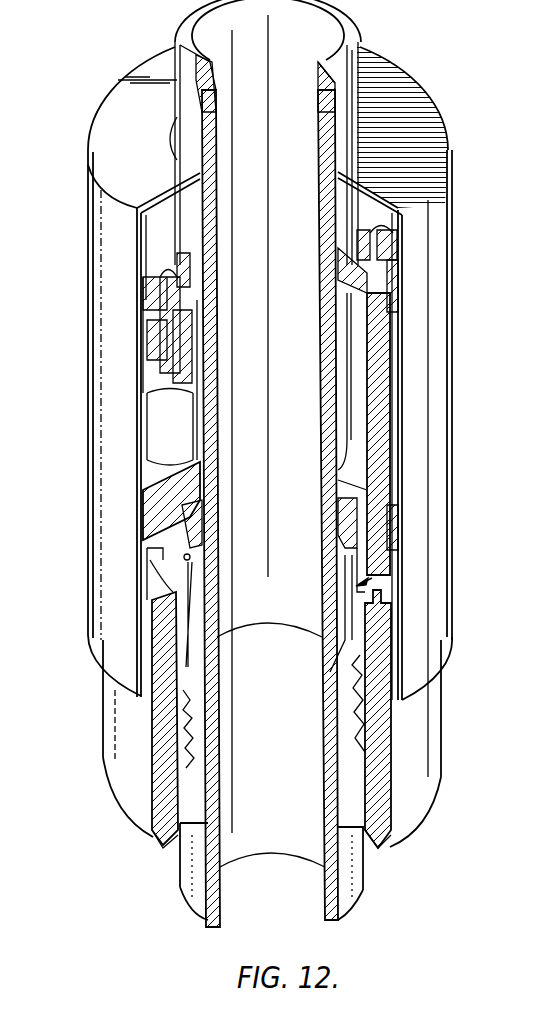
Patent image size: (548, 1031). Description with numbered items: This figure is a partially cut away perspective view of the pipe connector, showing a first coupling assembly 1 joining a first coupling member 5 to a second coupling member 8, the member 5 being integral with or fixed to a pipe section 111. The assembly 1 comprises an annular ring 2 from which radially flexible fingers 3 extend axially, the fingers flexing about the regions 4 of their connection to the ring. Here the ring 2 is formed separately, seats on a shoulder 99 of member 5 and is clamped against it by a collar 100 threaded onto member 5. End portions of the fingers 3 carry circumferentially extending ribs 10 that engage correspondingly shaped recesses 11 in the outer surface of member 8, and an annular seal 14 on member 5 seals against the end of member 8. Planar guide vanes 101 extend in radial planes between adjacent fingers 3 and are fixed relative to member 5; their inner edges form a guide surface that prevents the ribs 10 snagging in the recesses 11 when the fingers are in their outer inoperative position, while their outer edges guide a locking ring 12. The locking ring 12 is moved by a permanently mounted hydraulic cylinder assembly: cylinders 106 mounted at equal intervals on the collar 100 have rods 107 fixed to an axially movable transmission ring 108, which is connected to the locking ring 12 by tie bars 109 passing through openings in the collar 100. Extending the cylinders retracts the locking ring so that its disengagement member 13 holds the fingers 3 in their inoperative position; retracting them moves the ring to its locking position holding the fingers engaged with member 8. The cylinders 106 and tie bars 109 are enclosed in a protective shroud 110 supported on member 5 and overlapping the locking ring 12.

The first coupling assembly 1 is at (372, 578).
The annular body or ring 2 is at (347, 513).
The radially flexible fingers 3 is at (190, 605).
The regions of connection to the ring 4 is at (190, 557).
The first coupling member 5 is at (210, 655).
The second coupling member 8 is at (355, 885).
The ribs 10 is at (195, 710).
The recesses 11 is at (195, 694).
The locking ring 12 is at (384, 730).
The disengagement member 13 is at (391, 842).
The annular seal 14 is at (158, 842).
The shoulder 99 is at (198, 542).
The collar 100 is at (148, 513).
The guide members 101 is at (155, 558).
The cylinders 106 is at (160, 433).
The rods 107 is at (160, 314).
The transmission ring 108 is at (150, 246).
The tie bars 109 is at (376, 397).
The protective shroud 110 is at (432, 469).
The pipe section 111 is at (358, 78).